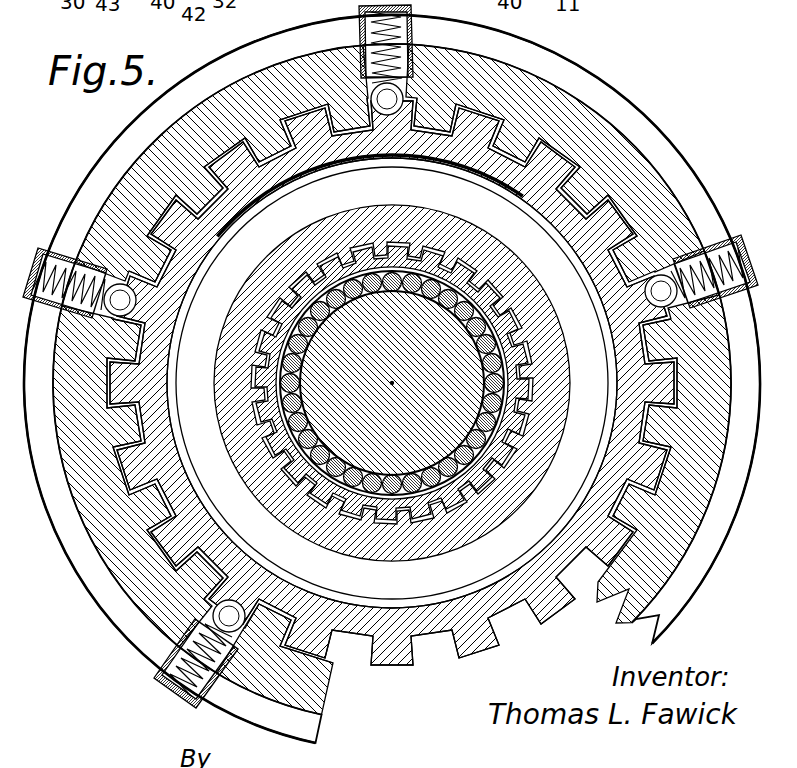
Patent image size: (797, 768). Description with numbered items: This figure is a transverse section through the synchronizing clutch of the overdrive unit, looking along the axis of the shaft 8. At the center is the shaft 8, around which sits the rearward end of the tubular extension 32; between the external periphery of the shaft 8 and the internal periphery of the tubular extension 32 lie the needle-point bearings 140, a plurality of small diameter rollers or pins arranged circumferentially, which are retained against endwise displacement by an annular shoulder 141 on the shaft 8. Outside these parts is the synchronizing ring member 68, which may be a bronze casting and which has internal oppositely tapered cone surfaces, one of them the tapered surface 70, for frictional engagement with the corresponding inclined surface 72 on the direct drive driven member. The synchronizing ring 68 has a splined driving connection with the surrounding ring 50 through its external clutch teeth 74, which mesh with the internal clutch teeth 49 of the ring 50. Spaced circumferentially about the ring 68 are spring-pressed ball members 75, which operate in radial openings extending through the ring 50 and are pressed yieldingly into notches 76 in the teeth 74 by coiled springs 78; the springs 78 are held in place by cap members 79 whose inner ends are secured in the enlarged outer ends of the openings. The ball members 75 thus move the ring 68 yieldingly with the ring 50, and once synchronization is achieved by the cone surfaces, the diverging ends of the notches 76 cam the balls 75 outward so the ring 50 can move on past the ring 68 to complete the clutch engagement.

The shaft 8 is at (333, 407).
The tubular extension 32 is at (403, 497).
The internal clutch teeth 49 is at (332, 112).
The ring 50 is at (600, 77).
The synchronizing ring member 68 is at (420, 143).
The internal tapered surface 70 is at (528, 197).
The inclined surface 72 is at (549, 239).
The external clutch teeth 74 is at (190, 519).
The ball members 75 is at (402, 88).
The notches 76 is at (396, 113).
The coiled springs 78 is at (36, 280).
The cap members 79 is at (46, 262).
The needle-point bearings 140 is at (243, 317).
The annular shoulder 141 is at (518, 435).